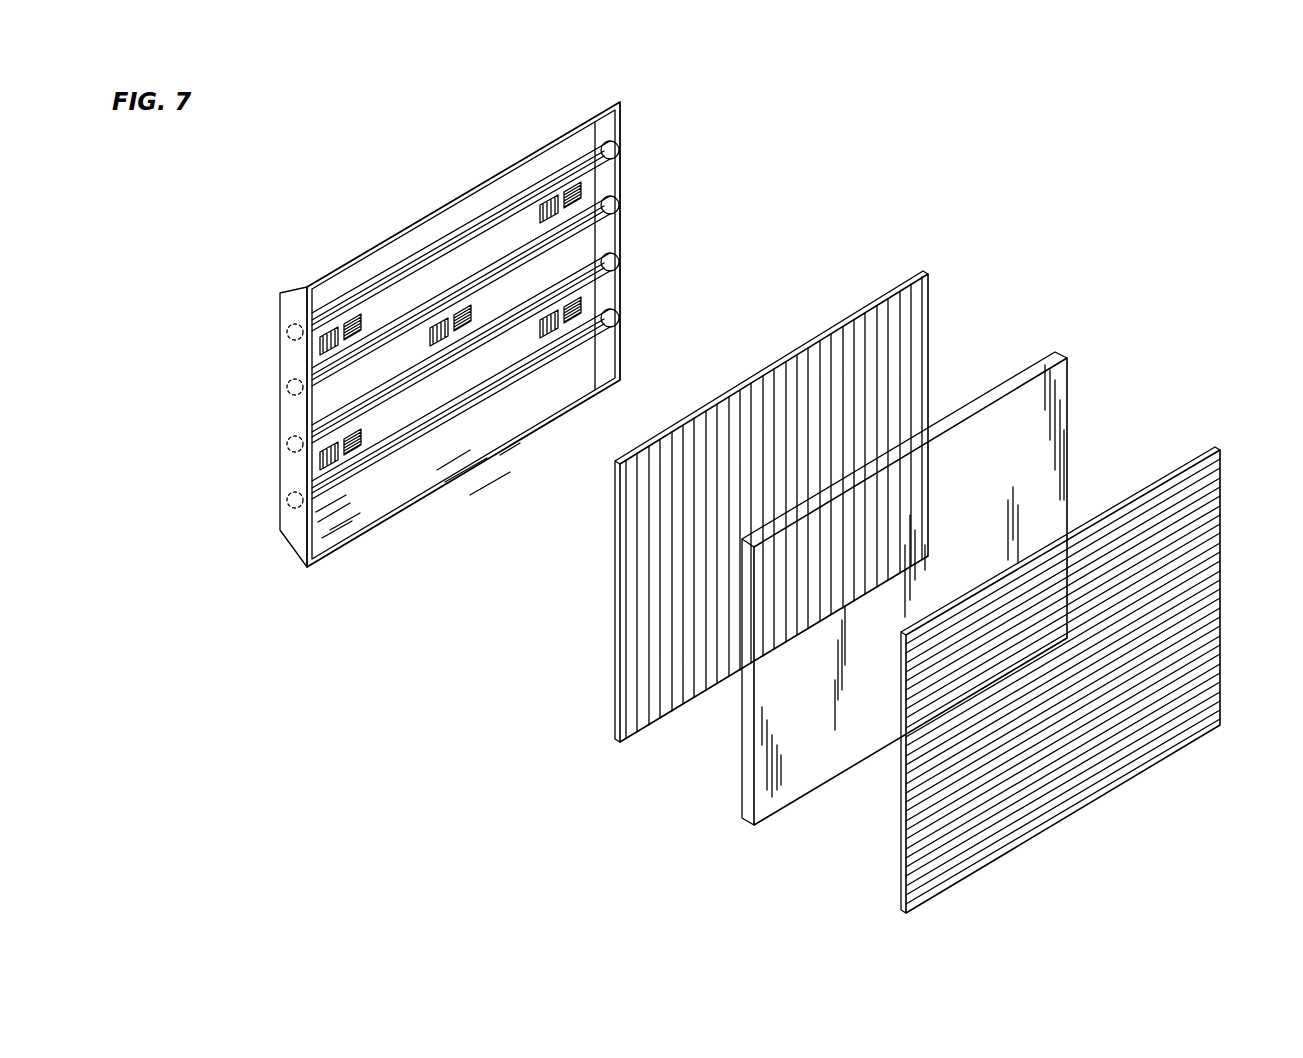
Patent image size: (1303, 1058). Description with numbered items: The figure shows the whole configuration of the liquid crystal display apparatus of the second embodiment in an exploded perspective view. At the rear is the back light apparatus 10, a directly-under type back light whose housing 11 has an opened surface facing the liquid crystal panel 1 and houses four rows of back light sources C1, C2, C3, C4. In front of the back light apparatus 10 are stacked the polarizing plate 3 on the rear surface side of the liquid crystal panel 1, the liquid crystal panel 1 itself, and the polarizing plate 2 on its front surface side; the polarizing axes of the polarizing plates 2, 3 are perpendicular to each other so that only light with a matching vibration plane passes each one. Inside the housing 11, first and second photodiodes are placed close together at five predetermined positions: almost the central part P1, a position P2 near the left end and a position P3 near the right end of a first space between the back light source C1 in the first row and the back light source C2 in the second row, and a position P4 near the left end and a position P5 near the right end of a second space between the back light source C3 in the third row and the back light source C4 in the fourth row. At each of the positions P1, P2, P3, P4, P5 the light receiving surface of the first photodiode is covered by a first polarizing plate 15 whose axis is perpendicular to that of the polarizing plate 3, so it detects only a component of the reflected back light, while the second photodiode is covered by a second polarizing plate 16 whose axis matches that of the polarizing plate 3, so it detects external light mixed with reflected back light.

The back light apparatus 10 is at (618, 104).
The housing 11 is at (305, 283).
The back light source C1 is at (289, 333).
The back light source C2 is at (289, 388).
The back light source C3 is at (289, 445).
The back light source C4 is at (289, 500).
The first polarizing plate 15 is at (570, 190).
The second polarizing plate 16 is at (543, 200).
The central position P1 is at (478, 318).
The position near left end in first space P2 is at (364, 321).
The position near right end in first space P3 is at (537, 212).
The position near left end in second space P4 is at (365, 440).
The position near right end in second space P5 is at (583, 312).
The liquid crystal panel 1 is at (1065, 355).
The polarizing plate 2 is at (1220, 452).
The polarizing plate 3 is at (930, 290).